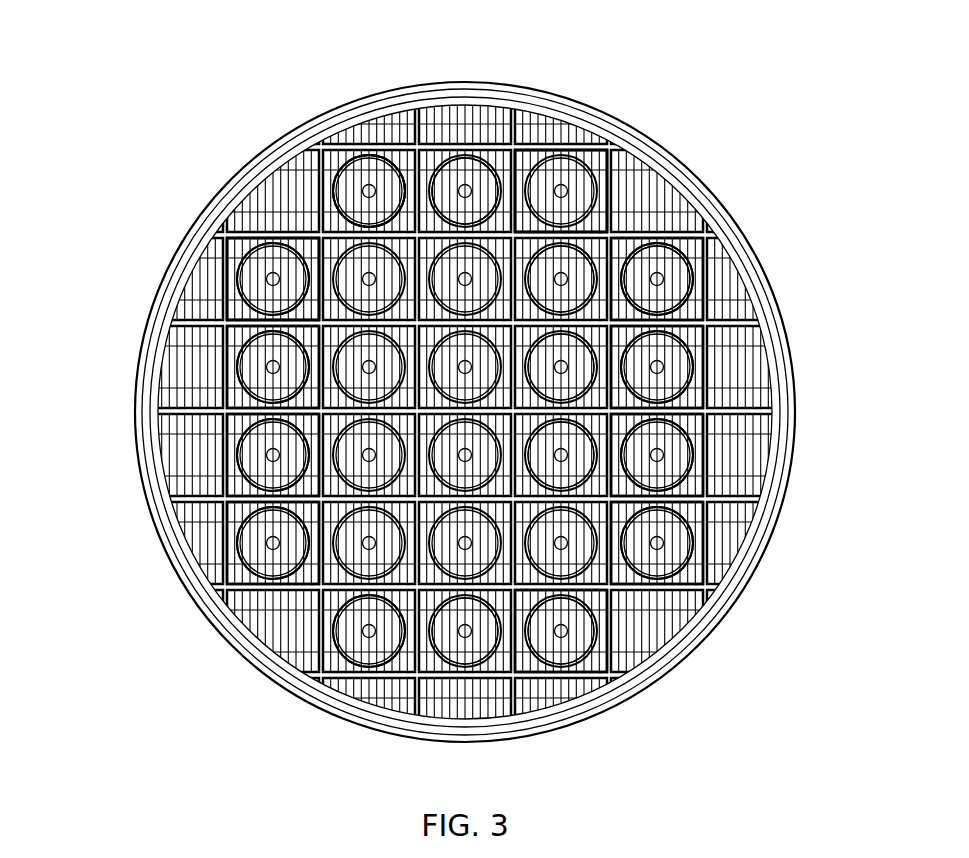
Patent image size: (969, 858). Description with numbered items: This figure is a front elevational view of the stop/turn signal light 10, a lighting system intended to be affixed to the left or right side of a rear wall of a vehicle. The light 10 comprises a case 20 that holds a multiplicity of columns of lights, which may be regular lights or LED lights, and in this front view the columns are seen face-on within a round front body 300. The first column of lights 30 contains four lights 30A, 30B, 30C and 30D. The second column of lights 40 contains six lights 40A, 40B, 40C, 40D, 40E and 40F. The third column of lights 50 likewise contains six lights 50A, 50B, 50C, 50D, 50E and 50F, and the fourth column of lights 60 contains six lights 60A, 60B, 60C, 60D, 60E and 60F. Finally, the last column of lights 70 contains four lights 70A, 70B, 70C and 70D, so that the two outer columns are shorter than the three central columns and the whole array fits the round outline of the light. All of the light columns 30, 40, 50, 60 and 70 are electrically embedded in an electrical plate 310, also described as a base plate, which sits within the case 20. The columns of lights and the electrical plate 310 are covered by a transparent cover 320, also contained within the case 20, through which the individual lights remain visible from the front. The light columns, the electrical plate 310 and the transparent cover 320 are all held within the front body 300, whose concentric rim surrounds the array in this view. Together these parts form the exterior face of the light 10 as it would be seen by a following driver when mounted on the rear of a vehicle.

The light 10 is at (658, 70).
The case 20 is at (640, 138).
The first column of lights 30 is at (237, 247).
The light 30A is at (237, 278).
The light 30B is at (238, 373).
The light 30C is at (226, 487).
The light 30D is at (232, 562).
The second column of lights 40 is at (357, 153).
The light 40A is at (355, 150).
The light 40B is at (215, 230).
The light 40C is at (226, 323).
The light 40D is at (236, 412).
The light 40E is at (240, 518).
The light 40F is at (365, 702).
The third column of lights 50 is at (447, 155).
The light 50A is at (465, 157).
The light 50B is at (570, 240).
The light 50C is at (600, 340).
The light 50D is at (600, 430).
The light 50E is at (508, 700).
The light 50F is at (472, 700).
The fourth column of lights 60 is at (560, 155).
The light 60A is at (617, 163).
The light 60B is at (628, 240).
The light 60C is at (705, 322).
The light 60D is at (705, 410).
The light 60E is at (705, 497).
The light 60F is at (606, 633).
The last column of lights 70 is at (672, 252).
The light 70A is at (690, 280).
The light 70B is at (692, 366).
The light 70C is at (692, 452).
The light 70D is at (692, 545).
The front body 300 is at (600, 712).
The electrical plate 310 is at (197, 250).
The transparent cover 320 is at (612, 183).